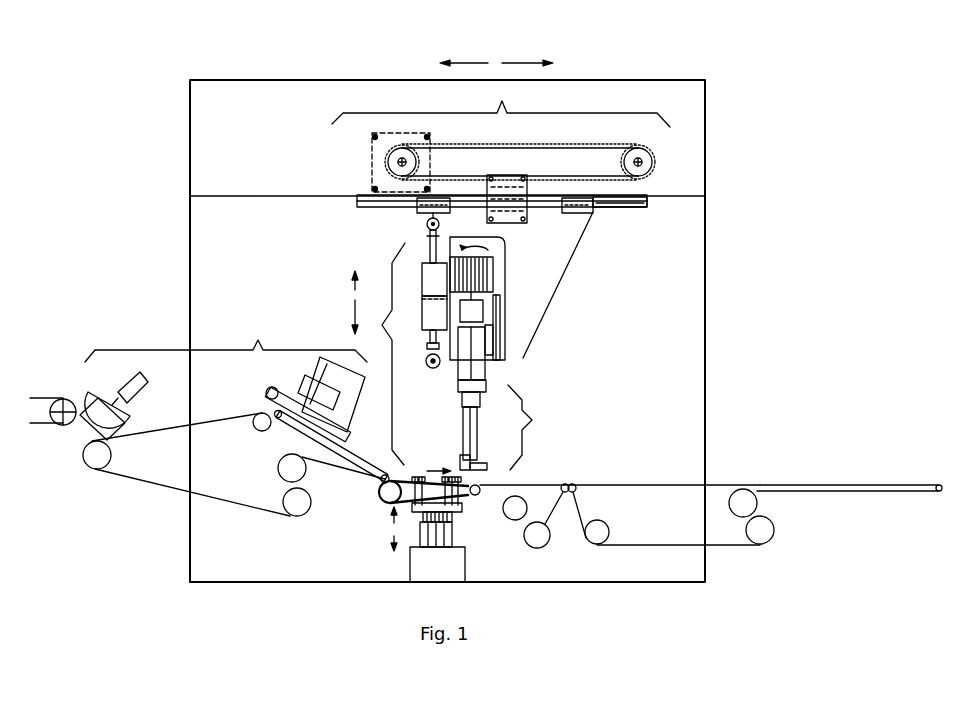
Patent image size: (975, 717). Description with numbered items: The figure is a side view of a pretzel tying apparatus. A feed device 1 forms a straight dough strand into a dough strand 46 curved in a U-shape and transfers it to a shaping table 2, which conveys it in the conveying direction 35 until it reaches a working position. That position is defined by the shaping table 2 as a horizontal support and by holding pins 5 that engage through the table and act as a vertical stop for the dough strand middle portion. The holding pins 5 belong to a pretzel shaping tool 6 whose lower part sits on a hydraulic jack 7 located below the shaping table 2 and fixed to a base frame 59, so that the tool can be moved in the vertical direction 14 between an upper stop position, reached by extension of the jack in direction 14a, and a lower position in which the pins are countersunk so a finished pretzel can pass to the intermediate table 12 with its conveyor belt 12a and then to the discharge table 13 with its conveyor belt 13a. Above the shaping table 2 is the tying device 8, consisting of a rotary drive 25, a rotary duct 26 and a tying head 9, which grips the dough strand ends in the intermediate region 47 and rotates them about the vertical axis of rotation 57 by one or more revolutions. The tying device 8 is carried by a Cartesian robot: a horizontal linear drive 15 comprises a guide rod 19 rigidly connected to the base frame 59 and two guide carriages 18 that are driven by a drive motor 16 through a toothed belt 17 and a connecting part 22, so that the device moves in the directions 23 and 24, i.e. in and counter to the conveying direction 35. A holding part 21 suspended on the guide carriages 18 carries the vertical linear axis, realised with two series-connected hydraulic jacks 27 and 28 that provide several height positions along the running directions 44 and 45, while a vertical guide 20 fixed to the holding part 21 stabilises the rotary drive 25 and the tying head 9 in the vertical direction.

The feed device 1 is at (209, 414).
The shaping table 2 is at (381, 490).
The holding pins 5 is at (425, 478).
The pretzel shaping tool 6 is at (458, 513).
The hydraulic jack 7 is at (432, 530).
The tying device 8 is at (442, 339).
The tying head 9 is at (506, 426).
The intermediate table 12 is at (546, 507).
The conveyor belt 12a is at (540, 484).
The discharge table 13 is at (665, 500).
The conveyor belt 13a is at (722, 483).
The vertical direction 14 is at (381, 541).
The direction of extension 14a is at (378, 517).
The horizontal linear drive 15 is at (501, 136).
The drive motor 16 is at (373, 162).
The toothed belt 17 is at (517, 144).
The guide carriages 18 is at (417, 205).
The guide rod 19 is at (630, 206).
The vertical guide 20 is at (500, 343).
The holding part 21 is at (533, 263).
The connecting part 22 is at (513, 200).
The direction 23 is at (464, 51).
The direction 24 is at (527, 51).
The rotary drive 25 is at (472, 297).
The rotary duct 26 is at (462, 365).
The hydraulic jack 27 is at (428, 291).
The hydraulic jack 28 is at (430, 318).
The conveying direction 35 is at (439, 460).
The running direction 44 is at (342, 284).
The running direction 45 is at (342, 317).
The dough strand curved in a U-shape 46 is at (340, 452).
The intermediate region 47 is at (473, 494).
The axis of rotation 57 is at (437, 353).
The base frame 59 is at (668, 195).